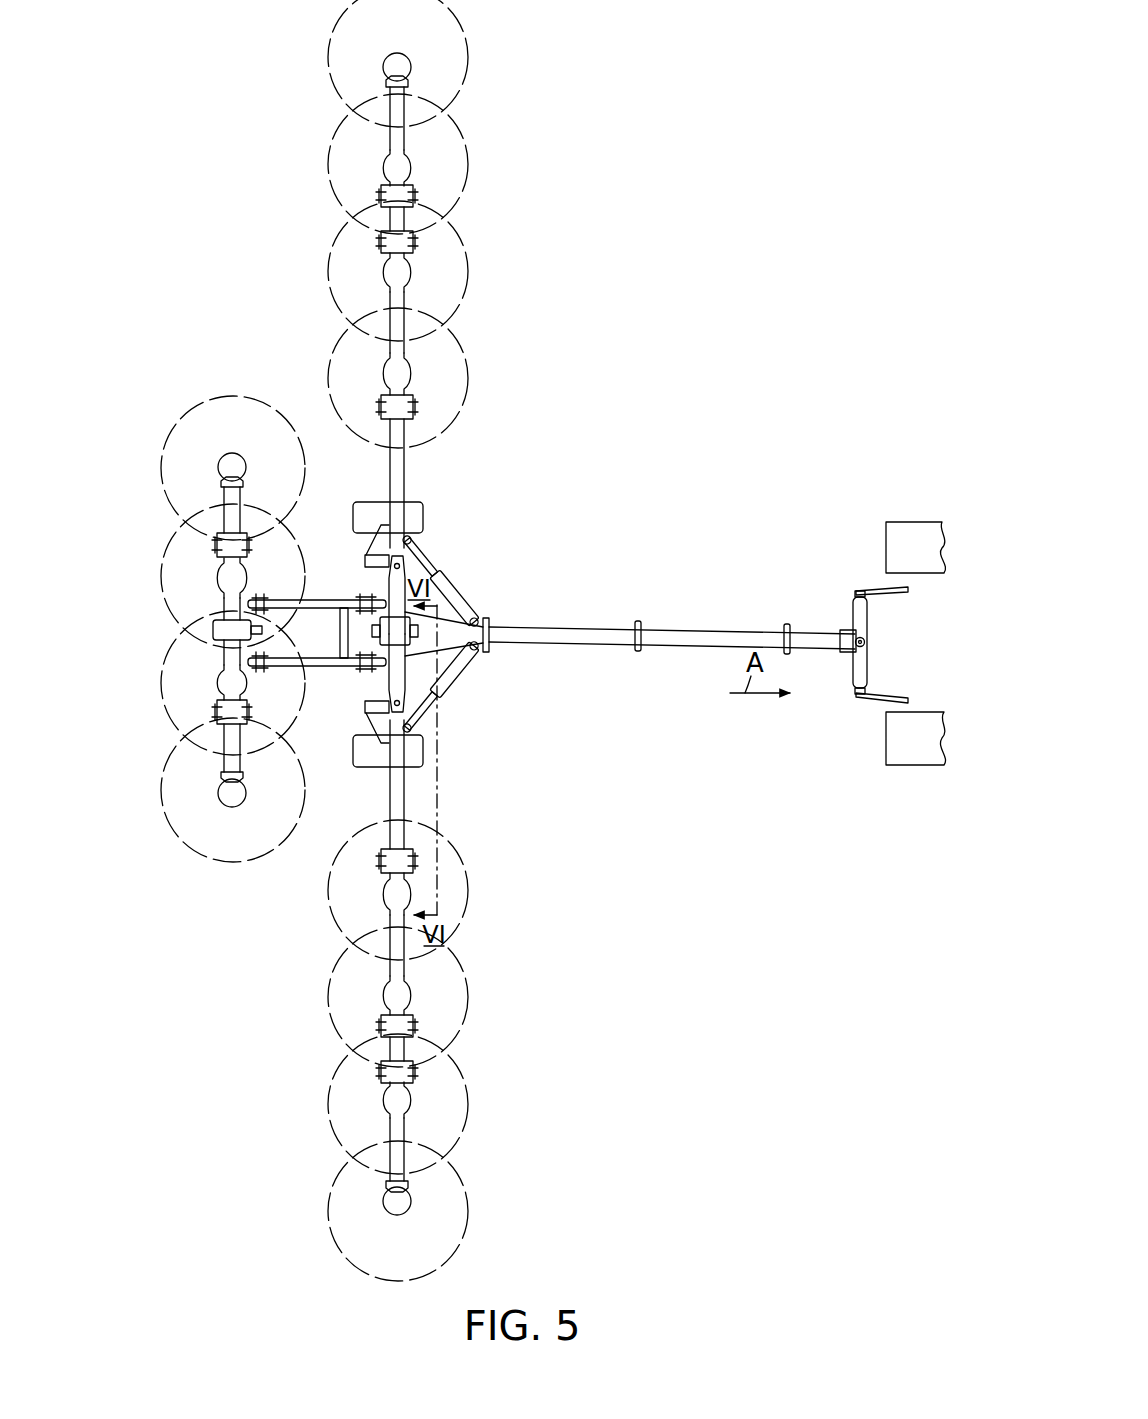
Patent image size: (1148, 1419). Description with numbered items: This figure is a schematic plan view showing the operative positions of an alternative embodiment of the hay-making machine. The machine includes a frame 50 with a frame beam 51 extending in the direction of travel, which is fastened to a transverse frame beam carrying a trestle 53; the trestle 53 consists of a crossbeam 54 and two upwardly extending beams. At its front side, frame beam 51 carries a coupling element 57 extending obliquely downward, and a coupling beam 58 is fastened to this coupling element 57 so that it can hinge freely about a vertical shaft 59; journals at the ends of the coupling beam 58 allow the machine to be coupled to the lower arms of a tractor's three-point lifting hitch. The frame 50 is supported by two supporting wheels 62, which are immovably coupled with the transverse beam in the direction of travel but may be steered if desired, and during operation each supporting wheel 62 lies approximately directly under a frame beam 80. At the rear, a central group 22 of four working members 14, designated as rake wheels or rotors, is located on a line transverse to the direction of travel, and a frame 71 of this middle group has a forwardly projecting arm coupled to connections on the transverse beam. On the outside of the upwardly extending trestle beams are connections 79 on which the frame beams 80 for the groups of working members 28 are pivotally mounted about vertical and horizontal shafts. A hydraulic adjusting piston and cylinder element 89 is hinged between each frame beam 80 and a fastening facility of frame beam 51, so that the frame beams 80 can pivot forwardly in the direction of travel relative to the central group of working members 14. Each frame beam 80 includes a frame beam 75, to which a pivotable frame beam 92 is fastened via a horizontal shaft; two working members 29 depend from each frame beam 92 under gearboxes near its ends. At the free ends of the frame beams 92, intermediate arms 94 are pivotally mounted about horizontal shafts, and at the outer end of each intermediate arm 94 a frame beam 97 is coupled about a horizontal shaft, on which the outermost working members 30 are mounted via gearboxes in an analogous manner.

The working member 14 is at (186, 531).
The central group of working members 22 is at (163, 668).
The group of working members 28 is at (462, 243).
The working member 29 is at (345, 358).
The working member 30 is at (345, 141).
The frame 50 is at (600, 621).
The frame beam 51 is at (697, 636).
The trestle 53 is at (414, 689).
The crossbeam 54 is at (393, 594).
The coupling element 57 is at (817, 650).
The coupling beam 58 is at (853, 606).
The vertical shaft 59 is at (869, 642).
The supporting wheel 62 is at (424, 515).
The frame 71 is at (205, 570).
The frame beam 75 is at (405, 478).
The connection 79 is at (366, 562).
The frame beam 80 is at (370, 282).
The hydraulic adjusting piston and cylinder element 89 is at (456, 600).
The frame beam 92 is at (396, 322).
The intermediate arm 94 is at (410, 199).
The frame beam 97 is at (402, 116).